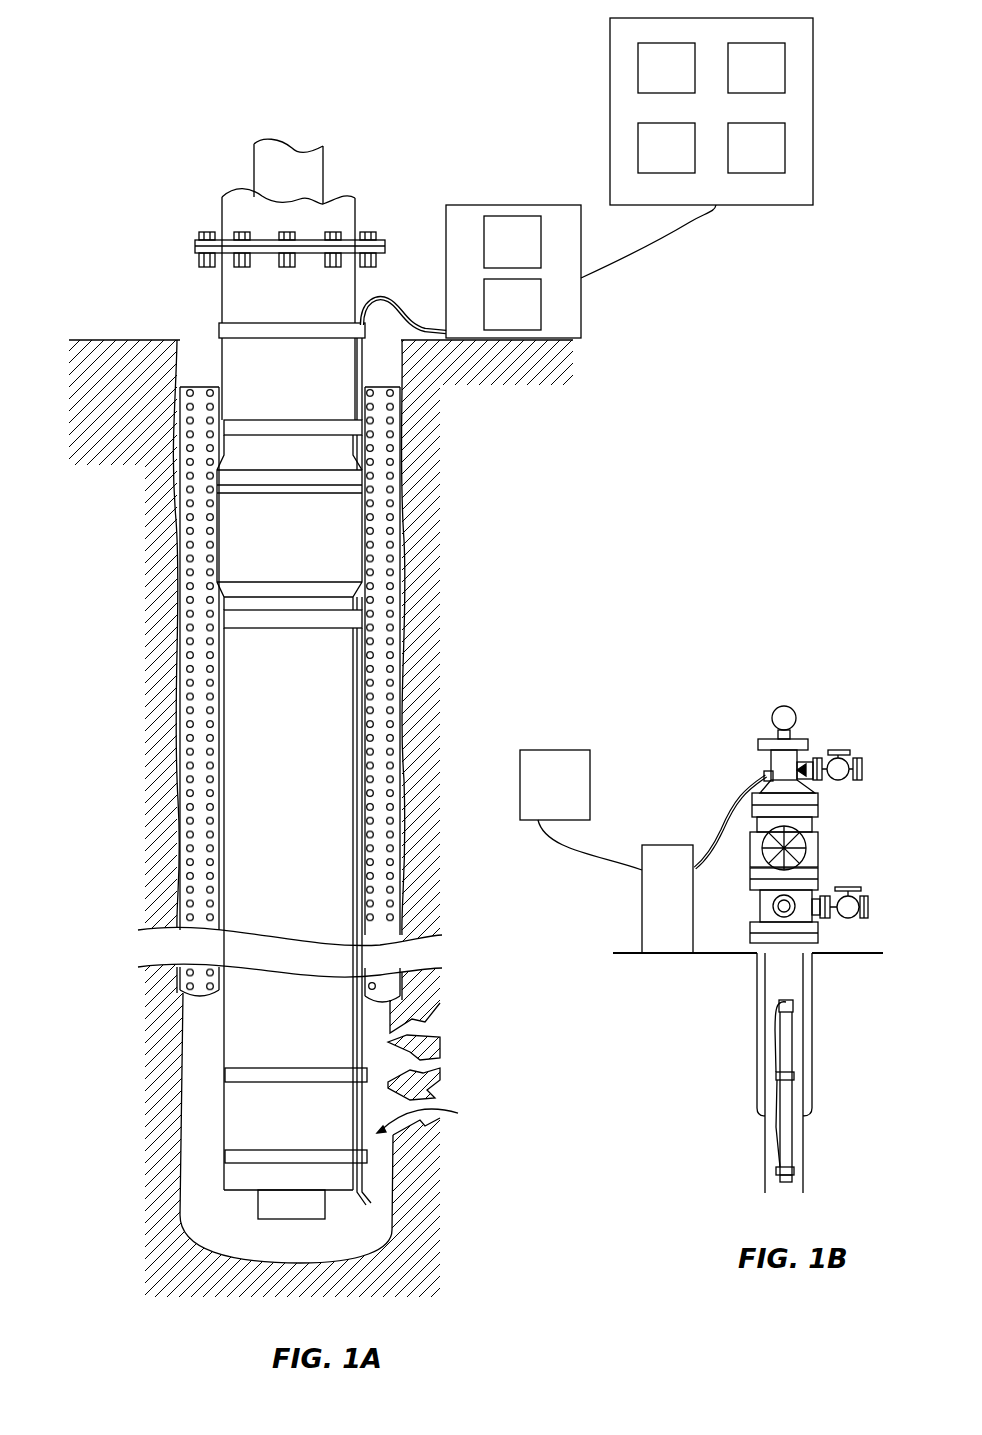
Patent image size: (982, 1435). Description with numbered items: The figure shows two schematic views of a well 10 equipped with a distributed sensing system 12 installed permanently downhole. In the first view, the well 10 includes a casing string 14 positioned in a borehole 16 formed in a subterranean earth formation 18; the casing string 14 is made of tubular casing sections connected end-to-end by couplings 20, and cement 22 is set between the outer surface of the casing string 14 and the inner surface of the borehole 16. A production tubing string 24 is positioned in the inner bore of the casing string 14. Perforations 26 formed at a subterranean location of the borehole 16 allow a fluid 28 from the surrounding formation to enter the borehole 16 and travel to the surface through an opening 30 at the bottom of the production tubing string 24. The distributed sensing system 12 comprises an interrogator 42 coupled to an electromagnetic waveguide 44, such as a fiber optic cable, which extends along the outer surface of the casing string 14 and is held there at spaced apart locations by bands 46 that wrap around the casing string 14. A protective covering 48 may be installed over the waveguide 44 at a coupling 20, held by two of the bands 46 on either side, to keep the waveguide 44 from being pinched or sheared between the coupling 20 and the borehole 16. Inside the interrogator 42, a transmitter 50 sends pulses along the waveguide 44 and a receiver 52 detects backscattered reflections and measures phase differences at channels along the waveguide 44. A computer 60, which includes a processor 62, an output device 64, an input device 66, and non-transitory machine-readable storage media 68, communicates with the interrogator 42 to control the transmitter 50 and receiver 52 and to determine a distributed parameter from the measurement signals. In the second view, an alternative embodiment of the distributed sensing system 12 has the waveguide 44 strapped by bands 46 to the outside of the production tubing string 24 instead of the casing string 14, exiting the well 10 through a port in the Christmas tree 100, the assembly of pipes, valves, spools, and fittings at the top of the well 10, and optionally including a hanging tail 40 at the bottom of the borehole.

In FIG. 1A, the well 10 is at (218, 95).
In FIG. 1B, the well 10 is at (810, 705).
In FIG. 1A, the distributed sensing system 12 is at (365, 62).
In FIG. 1B, the distributed sensing system 12 is at (653, 728).
In FIG. 1A, the casing string 14 is at (221, 292).
In FIG. 1B, the casing string 14 is at (812, 1000).
In FIG. 1A, the borehole 16 is at (197, 338).
In FIG. 1A, the subterranean earth formation 18 is at (108, 390).
In FIG. 1A, the coupling 20 is at (345, 540).
In FIG. 1A, the cement 22 is at (372, 822).
In FIG. 1A, the production tubing string 24 is at (325, 176).
In FIG. 1B, the production tubing string 24 is at (793, 1152).
In FIG. 1A, the perforations 26 is at (498, 990).
In FIG. 1A, the fluid 28 is at (436, 1119).
In FIG. 1A, the opening 30 is at (300, 1232).
In FIG. 1B, the hanging tail 40 is at (778, 1186).
In FIG. 1A, the interrogator 42 is at (472, 205).
In FIG. 1B, the interrogator 42 is at (642, 918).
In FIG. 1A, the electromagnetic waveguide 44 is at (386, 297).
In FIG. 1B, the electromagnetic waveguide 44 is at (725, 828).
In FIG. 1A, the bands 46 is at (260, 323).
In FIG. 1B, the bands 46 is at (794, 1076).
In FIG. 1A, the protective covering 48 is at (370, 522).
In FIG. 1A, the transmitter 50 is at (518, 216).
In FIG. 1A, the receiver 52 is at (541, 303).
In FIG. 1A, the computer 60 is at (753, 207).
In FIG. 1B, the computer 60 is at (571, 800).
In FIG. 1A, the processor 62 is at (638, 68).
In FIG. 1A, the output device 64 is at (638, 148).
In FIG. 1A, the input device 66 is at (785, 68).
In FIG. 1A, the non-transitory machine-readable storage media 68 is at (785, 148).
In FIG. 1B, the Christmas tree 100 is at (888, 708).